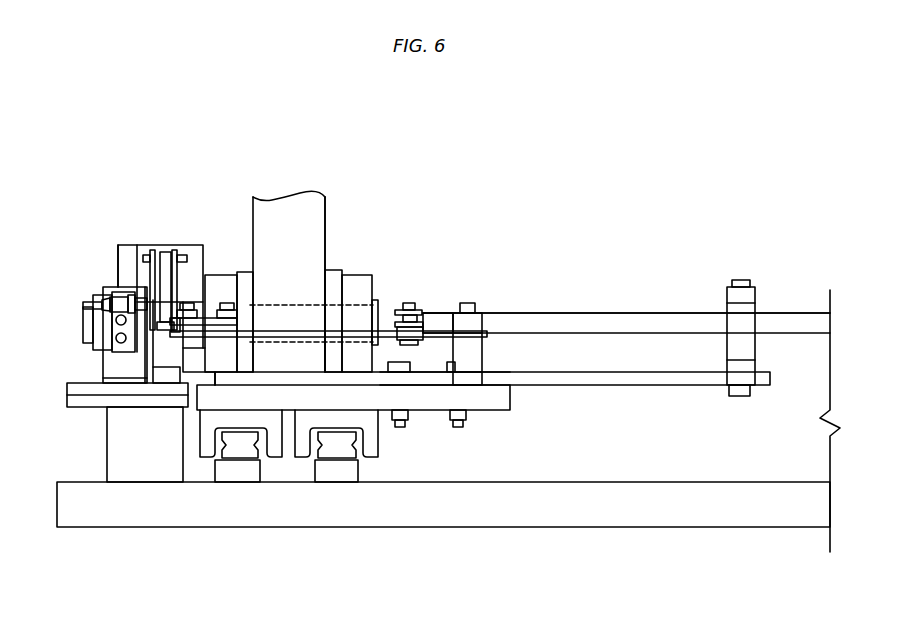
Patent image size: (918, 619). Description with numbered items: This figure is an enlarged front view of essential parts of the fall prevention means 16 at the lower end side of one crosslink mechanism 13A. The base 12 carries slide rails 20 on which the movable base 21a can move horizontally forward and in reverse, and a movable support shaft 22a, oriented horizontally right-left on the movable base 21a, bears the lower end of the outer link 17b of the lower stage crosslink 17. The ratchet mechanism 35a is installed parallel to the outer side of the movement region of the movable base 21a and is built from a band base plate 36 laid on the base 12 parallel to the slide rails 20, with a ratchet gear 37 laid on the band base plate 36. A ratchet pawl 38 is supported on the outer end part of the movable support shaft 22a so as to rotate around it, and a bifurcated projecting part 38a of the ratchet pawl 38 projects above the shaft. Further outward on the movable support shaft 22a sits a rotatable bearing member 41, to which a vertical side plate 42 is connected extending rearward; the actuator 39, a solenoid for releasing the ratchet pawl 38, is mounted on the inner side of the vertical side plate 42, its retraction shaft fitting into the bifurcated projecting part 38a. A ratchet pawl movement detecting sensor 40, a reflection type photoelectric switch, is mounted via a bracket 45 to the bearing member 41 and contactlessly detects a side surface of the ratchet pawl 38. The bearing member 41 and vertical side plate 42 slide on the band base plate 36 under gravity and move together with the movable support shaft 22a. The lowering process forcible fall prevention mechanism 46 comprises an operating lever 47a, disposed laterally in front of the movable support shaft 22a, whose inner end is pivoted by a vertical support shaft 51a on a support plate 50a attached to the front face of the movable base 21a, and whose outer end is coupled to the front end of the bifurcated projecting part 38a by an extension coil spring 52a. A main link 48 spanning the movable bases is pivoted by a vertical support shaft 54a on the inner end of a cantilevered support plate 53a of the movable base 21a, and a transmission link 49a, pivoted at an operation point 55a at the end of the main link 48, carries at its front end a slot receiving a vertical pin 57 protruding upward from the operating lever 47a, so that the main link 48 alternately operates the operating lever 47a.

The base 12 is at (573, 517).
The fall prevention means 16 is at (150, 481).
The ratchet mechanism 35a is at (123, 395).
The band base plate 36 is at (97, 388).
The ratchet gear 37 is at (167, 381).
The bearing member 41 is at (128, 361).
The bracket 45 is at (128, 323).
The ratchet pawl movement detecting sensor 40 is at (145, 290).
The vertical side plate 42 is at (127, 248).
The actuator (solenoid) 39 is at (160, 252).
The extension coil spring 52a is at (168, 298).
The bifurcated projecting part 38a is at (152, 277).
The ratchet pawl 38 is at (178, 358).
The operating lever 47a is at (290, 328).
The lower stage crosslink 17 is at (251, 220).
The outer link 17b is at (289, 211).
The crosslink mechanism 13A is at (335, 221).
The movable support shaft 22a is at (333, 313).
The movable base 21a is at (425, 402).
The support plate 50a is at (462, 380).
The support plate 53a is at (603, 380).
The slide rails 20 is at (240, 447).
The main link 48 is at (667, 327).
The lowering process forcible fall prevention mechanism 46 is at (623, 304).
The transmission link 49a is at (423, 324).
The vertical support shaft 51a is at (470, 303).
The vertical support shaft 54a is at (737, 280).
The operation point 55a is at (408, 300).
The vertical pin 57 is at (413, 311).